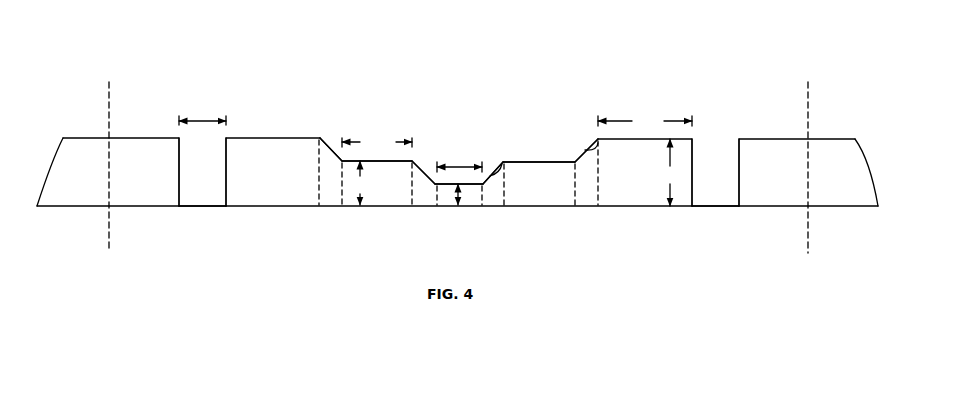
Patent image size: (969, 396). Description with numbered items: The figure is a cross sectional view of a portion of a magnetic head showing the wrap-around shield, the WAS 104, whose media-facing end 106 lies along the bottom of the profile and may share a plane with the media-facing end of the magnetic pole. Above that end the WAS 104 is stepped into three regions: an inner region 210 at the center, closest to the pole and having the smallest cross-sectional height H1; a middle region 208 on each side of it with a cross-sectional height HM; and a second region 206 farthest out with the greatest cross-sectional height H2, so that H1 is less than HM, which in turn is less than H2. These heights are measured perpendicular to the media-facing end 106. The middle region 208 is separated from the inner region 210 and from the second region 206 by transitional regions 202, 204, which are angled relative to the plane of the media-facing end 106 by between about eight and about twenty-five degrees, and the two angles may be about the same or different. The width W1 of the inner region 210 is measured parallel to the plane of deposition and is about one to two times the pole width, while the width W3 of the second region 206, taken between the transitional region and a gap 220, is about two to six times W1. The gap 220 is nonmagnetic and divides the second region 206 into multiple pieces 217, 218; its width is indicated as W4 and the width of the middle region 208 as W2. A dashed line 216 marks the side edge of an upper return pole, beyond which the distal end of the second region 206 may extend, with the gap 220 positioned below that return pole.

The WAS 104 is at (551, 160).
The media-facing end 106 is at (344, 222).
The transitional region 202 is at (332, 150).
The transitional region 204 is at (425, 171).
The second region 206 is at (459, 172).
The middle region 208 is at (458, 172).
The inner region 210 is at (447, 193).
The dashed line 216 is at (109, 89).
The piece 217 is at (282, 207).
The piece 218 is at (70, 207).
The gap 220 is at (200, 176).
The width of the inner region W1 is at (460, 165).
The intermediate surface width W2 is at (377, 142).
The width of the second region W3 is at (645, 121).
The gap width W4 is at (204, 119).
The cross-sectional height of the inner region H1 is at (463, 194).
The cross-sectional height of the second region H2 is at (669, 172).
The cross-sectional height of the middle region HM is at (359, 183).